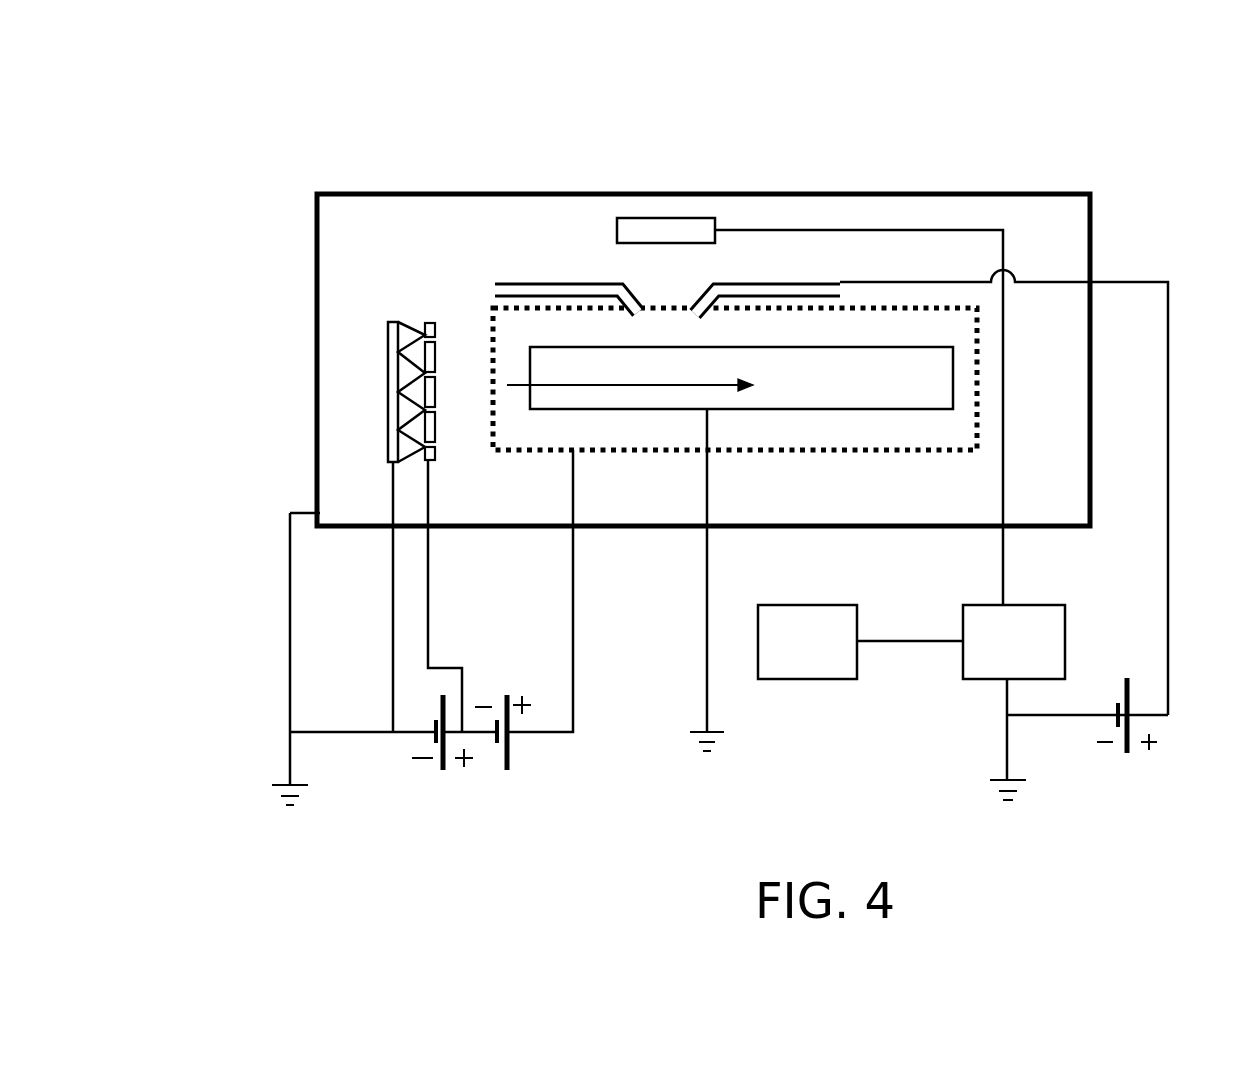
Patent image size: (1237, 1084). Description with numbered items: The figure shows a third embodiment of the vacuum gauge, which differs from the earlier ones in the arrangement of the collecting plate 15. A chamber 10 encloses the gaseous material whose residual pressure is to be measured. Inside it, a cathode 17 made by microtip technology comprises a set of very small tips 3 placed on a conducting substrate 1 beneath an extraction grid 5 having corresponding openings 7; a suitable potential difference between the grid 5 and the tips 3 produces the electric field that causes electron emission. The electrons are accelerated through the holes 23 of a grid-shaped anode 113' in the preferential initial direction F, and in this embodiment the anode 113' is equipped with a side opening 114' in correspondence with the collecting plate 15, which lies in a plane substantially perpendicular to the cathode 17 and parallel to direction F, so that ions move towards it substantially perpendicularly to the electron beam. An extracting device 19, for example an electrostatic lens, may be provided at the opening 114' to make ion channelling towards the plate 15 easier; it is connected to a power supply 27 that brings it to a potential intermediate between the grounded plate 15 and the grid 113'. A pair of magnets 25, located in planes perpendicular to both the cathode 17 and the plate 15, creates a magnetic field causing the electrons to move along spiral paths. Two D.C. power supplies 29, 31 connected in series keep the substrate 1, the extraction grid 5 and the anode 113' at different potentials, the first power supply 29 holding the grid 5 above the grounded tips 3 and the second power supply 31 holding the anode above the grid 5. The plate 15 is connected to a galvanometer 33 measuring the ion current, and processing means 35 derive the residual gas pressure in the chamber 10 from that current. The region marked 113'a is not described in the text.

The conducting substrate 1 is at (388, 324).
The microtips 3 is at (400, 368).
The extraction grid 5 is at (435, 323).
The openings 7 is at (432, 462).
The chamber 10 is at (1090, 194).
The collecting plate 15 is at (650, 219).
The cathode 17 is at (403, 290).
The extracting device 19 is at (830, 298).
The holes 23 is at (493, 326).
The magnets 25 is at (866, 388).
The power supply 27 is at (1135, 757).
The first power supply 29 is at (447, 785).
The second power supply 31 is at (537, 745).
The galvanometer 33 is at (1032, 658).
The processing means 35 is at (824, 658).
The grid-shaped anode 113' is at (784, 623).
The shield opening 113'a is at (594, 562).
The side opening 114' is at (667, 305).